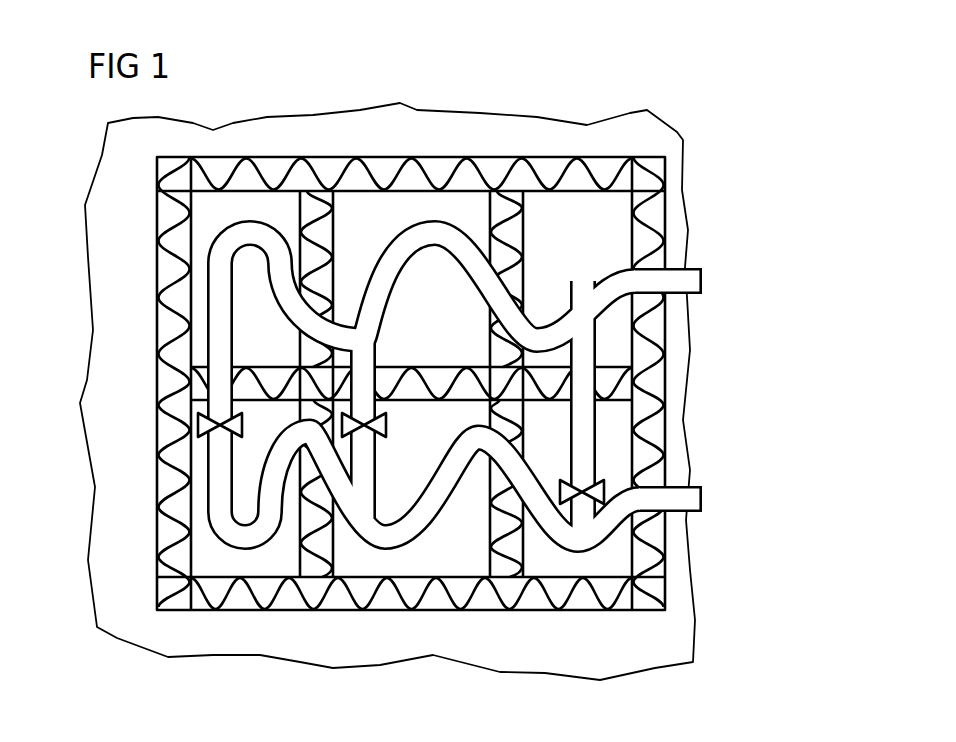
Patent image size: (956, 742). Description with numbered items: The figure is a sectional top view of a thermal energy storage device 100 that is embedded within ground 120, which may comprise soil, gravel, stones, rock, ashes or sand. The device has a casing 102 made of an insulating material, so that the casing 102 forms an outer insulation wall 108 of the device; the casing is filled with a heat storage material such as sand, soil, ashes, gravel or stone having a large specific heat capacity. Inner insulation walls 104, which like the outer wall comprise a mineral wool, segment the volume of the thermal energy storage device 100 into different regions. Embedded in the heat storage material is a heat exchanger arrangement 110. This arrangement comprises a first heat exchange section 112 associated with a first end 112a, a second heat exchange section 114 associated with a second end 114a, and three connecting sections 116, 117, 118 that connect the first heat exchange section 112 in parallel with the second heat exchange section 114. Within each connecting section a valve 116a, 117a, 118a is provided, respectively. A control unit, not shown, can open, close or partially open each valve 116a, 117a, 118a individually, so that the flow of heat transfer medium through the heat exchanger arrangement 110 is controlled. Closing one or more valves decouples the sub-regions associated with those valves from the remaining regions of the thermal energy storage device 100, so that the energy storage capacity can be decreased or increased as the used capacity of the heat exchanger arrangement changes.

The thermal energy storage device 100 is at (436, 367).
The casing 102 is at (667, 205).
The inner insulation walls 104 is at (334, 237).
The outer insulation wall 108 is at (666, 241).
The heat exchanger arrangement 110 is at (568, 308).
The first heat exchange section 112 is at (433, 236).
The first end 112a is at (702, 281).
The second heat exchange section 114 is at (399, 553).
The second end 114a is at (700, 498).
The connecting section 116 is at (583, 418).
The valve 116a is at (583, 505).
The connecting section 117 is at (385, 350).
The valve 117a is at (388, 423).
The connecting section 118 is at (223, 340).
The valve 118a is at (197, 425).
The ground 120 is at (668, 652).